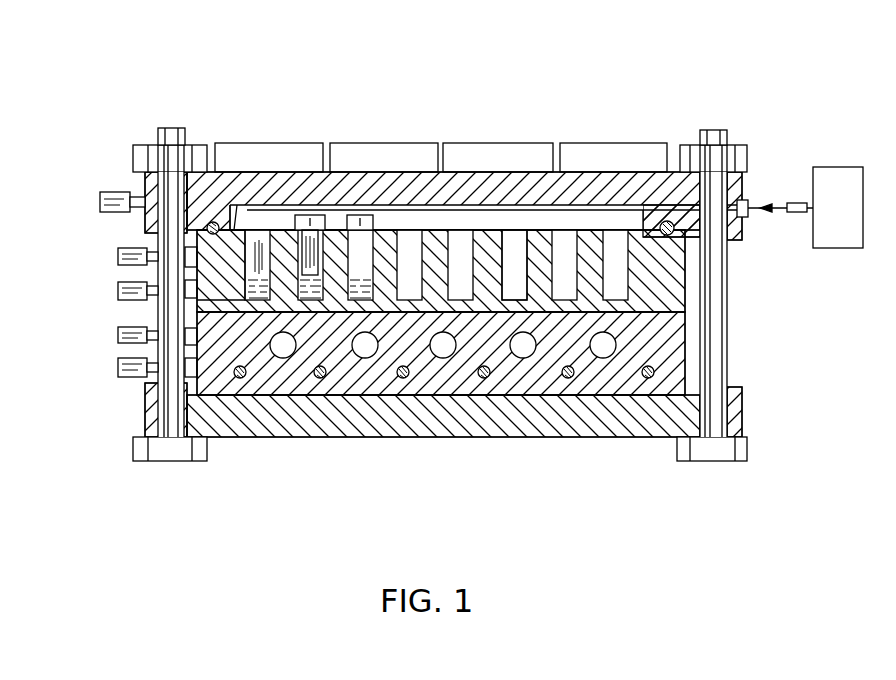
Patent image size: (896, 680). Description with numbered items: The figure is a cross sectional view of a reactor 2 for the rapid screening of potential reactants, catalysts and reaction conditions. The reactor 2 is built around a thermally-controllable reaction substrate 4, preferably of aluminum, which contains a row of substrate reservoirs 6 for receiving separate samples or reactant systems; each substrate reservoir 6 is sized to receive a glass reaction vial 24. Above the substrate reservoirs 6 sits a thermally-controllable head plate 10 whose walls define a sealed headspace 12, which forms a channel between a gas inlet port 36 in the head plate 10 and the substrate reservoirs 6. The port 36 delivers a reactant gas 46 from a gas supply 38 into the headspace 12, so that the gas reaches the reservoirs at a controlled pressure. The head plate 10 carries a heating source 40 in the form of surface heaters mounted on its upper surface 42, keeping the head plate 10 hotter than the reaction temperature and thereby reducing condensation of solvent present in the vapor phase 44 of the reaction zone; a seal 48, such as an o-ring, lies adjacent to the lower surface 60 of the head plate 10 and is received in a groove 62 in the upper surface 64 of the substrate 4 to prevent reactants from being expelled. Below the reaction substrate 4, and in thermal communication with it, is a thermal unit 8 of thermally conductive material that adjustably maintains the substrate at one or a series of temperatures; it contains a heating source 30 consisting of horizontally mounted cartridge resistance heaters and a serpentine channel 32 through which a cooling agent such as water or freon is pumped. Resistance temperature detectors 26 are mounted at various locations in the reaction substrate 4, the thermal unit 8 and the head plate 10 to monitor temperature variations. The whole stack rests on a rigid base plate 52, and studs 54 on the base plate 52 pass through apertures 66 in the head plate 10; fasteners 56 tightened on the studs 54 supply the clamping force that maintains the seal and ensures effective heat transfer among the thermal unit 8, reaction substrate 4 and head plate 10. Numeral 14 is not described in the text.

The reactor 2 is at (253, 550).
The reaction substrate 4 is at (683, 236).
The substrate reservoir 6 is at (562, 231).
The thermal unit 8 is at (665, 347).
The head plate 10 is at (463, 229).
The headspace 12 is at (520, 248).
The bar upper surface 14 is at (477, 205).
The glass reaction vial 24 is at (360, 215).
The resistance temperature detector 26 is at (100, 199).
The heating source 30 is at (240, 378).
The serpentine channel 32 is at (530, 352).
The gas inlet port 36 is at (750, 200).
The gas supply 38 is at (838, 207).
The heating source 40 is at (303, 143).
The upper surface 42 is at (332, 147).
The vapor phase 44 is at (308, 258).
The reactant gas 46 is at (676, 168).
The seal 48 is at (674, 229).
The base plate 52 is at (740, 418).
The stud 54 is at (715, 372).
The fastener 56 is at (138, 152).
The lower surface 60 is at (197, 234).
The groove 62 is at (207, 228).
The upper surface 64 is at (237, 203).
The aperture 66 is at (145, 183).